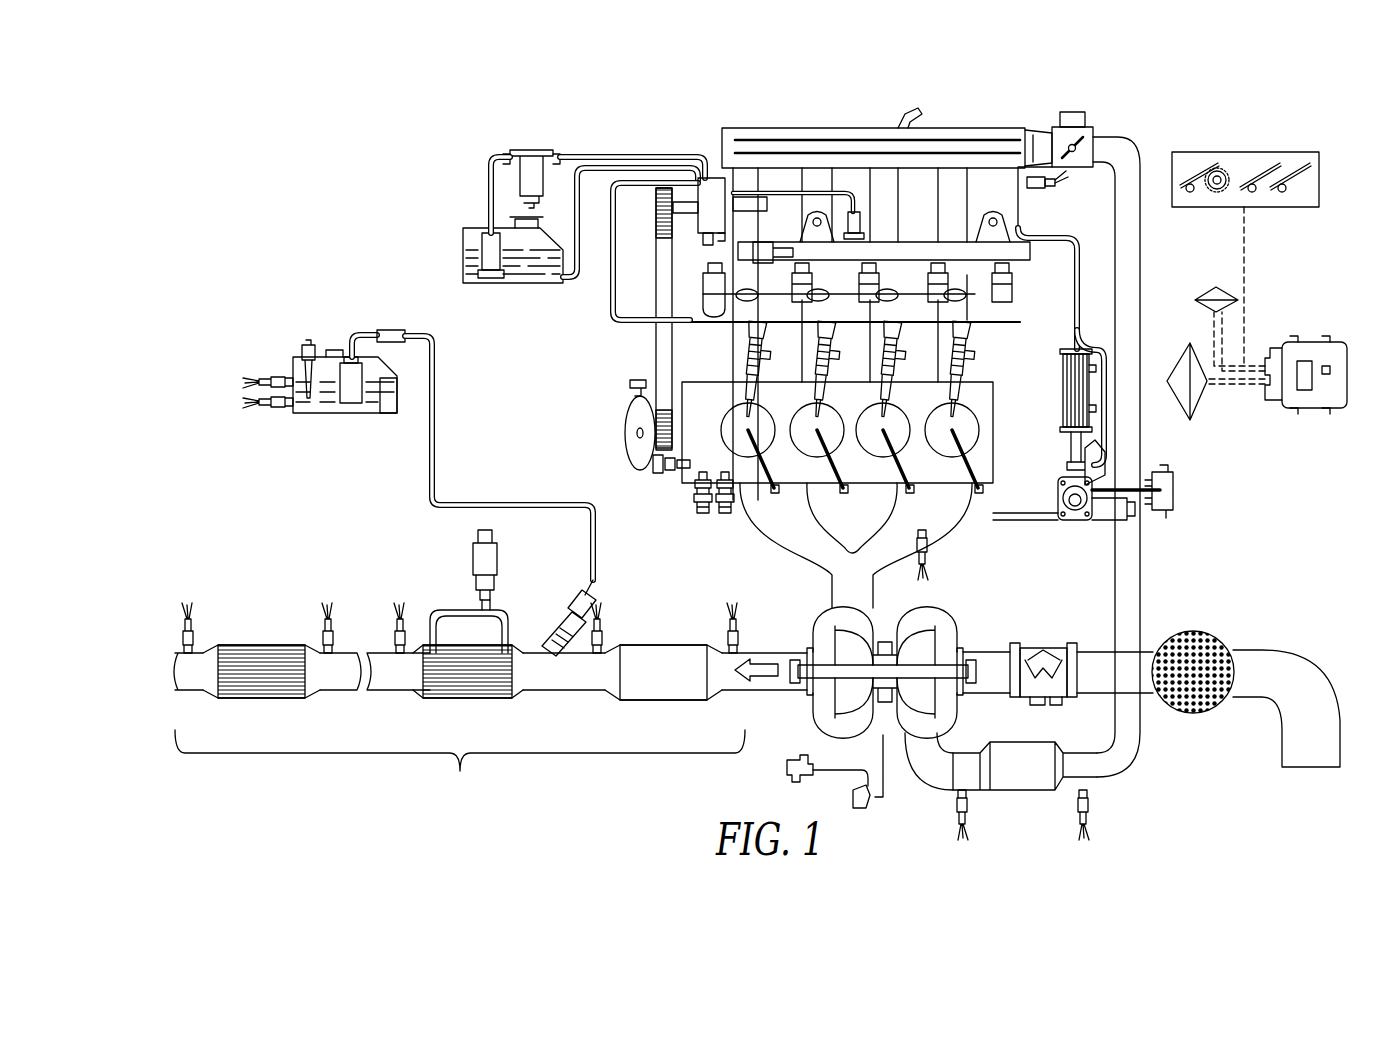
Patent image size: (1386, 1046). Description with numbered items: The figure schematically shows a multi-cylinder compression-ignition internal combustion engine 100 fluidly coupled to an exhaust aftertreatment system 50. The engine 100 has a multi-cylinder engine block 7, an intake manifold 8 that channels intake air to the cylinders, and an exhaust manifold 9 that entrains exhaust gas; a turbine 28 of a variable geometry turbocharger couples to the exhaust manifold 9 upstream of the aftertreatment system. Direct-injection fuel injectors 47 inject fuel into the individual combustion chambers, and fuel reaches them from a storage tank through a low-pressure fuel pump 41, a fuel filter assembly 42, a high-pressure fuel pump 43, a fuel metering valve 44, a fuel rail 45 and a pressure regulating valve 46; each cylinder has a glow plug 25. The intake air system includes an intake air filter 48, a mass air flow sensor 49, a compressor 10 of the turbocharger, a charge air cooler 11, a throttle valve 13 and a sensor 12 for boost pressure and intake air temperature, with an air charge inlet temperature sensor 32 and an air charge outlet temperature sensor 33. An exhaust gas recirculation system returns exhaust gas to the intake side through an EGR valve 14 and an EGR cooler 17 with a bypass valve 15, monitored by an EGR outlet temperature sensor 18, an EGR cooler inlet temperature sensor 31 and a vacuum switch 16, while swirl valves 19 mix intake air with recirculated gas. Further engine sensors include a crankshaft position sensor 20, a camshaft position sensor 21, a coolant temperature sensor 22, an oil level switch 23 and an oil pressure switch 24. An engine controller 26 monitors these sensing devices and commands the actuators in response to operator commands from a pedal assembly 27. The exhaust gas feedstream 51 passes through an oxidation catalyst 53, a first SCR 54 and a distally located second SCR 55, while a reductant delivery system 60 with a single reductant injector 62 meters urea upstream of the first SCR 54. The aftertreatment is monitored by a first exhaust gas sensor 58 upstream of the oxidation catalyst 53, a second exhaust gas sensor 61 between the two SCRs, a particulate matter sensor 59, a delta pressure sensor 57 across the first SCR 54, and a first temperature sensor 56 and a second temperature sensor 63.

The internal combustion engine 100 is at (352, 172).
The multi-cylinder engine block 7 is at (660, 447).
The intake manifold 8 is at (824, 510).
The exhaust manifold 9 is at (836, 128).
The compressor 10 is at (940, 715).
The charge air cooler 11 is at (1025, 790).
The sensor 12 is at (912, 116).
The throttle valve 13 is at (1076, 148).
The EGR valve 14 is at (1078, 510).
The bypass valve 15 is at (1107, 470).
The vacuum switch 16 is at (1175, 503).
The EGR cooler 17 is at (1080, 395).
The EGR outlet temperature sensor 18 is at (1046, 189).
The swirl valves 19 is at (747, 289).
The crankshaft position sensor 20 is at (655, 425).
The camshaft position sensor 21 is at (1010, 380).
The coolant temperature sensor 22 is at (655, 475).
The oil level switch 23 is at (725, 515).
The oil pressure switch 24 is at (695, 500).
The glow plug 25 is at (775, 494).
The engine controller 26 is at (1305, 410).
The pedal assembly 27 is at (1240, 152).
The turbine 28 is at (833, 716).
The EGR cooler inlet temperature sensor 31 is at (930, 560).
The air charge inlet temperature sensor 32 is at (958, 800).
The air charge outlet temperature sensor 33 is at (1090, 798).
The low-pressure fuel pump 41 is at (482, 240).
The fuel filter assembly 42 is at (530, 150).
The high-pressure fuel pump 43 is at (715, 178).
The fuel metering valve 44 is at (745, 197).
The fuel rail 45 is at (985, 262).
The pressure regulating valve 46 is at (770, 242).
The direct-injection fuel injectors 47 is at (750, 360).
The intake air filter 48 is at (1193, 630).
The mass air flow sensor 49 is at (1043, 648).
The exhaust aftertreatment system 50 is at (462, 773).
The exhaust gas feedstream 51 is at (760, 682).
The oxidation catalyst 53 is at (660, 702).
The first SCR 54 is at (462, 700).
The second SCR 55 is at (268, 700).
The first temperature sensor 56 is at (603, 628).
The delta pressure sensor 57 is at (497, 560).
The first exhaust gas sensor 58 is at (740, 630).
The particulate matter sensor 59 is at (196, 638).
The reductant delivery system 60 is at (373, 325).
The second exhaust gas sensor 61 is at (392, 630).
The reductant injector 62 is at (582, 592).
The second temperature sensor 63 is at (322, 630).